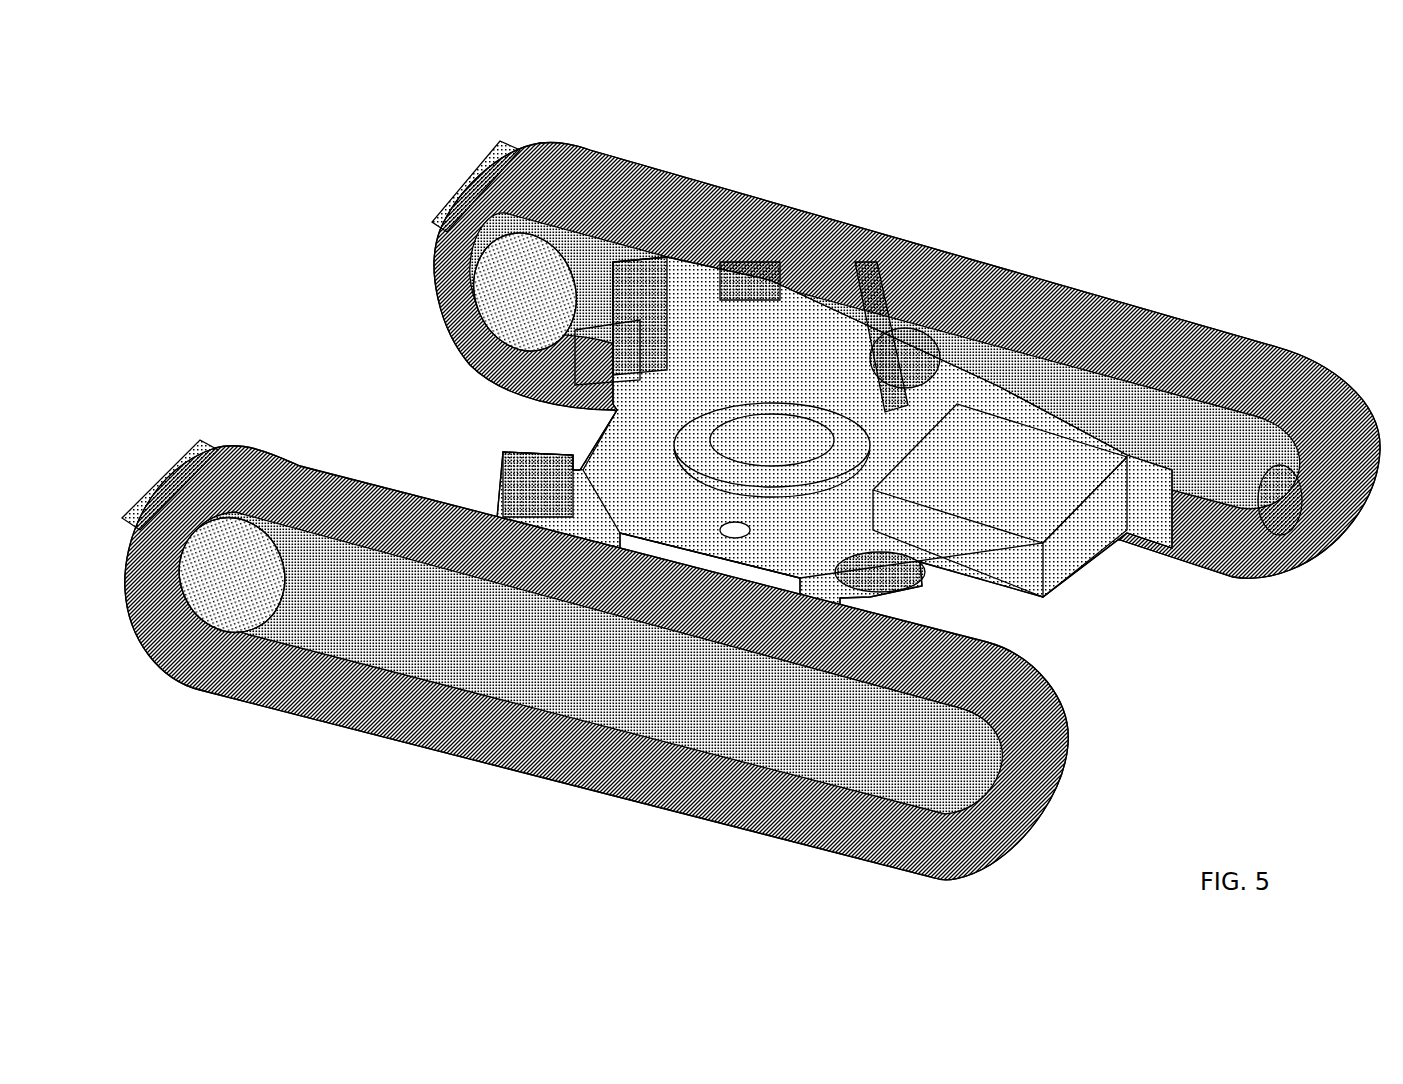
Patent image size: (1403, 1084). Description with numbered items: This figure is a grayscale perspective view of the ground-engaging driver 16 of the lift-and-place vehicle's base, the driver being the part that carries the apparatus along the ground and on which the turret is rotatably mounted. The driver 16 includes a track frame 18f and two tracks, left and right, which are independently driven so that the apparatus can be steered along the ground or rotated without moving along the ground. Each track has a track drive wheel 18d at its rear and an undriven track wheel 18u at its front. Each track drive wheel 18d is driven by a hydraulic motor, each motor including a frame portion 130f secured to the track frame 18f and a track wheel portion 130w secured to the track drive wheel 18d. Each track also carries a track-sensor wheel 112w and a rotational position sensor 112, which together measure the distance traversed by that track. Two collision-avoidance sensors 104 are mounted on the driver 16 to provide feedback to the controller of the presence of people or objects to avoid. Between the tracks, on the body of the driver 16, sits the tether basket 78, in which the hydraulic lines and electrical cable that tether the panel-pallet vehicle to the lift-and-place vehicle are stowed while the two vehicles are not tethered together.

The ground-engaging driver 16 is at (1175, 158).
The track drive wheel 18d is at (636, 257).
The track frame 18f is at (596, 345).
The undriven track wheel 18u is at (1280, 515).
The tether basket 78 is at (1021, 509).
The collision-avoidance sensor 104 is at (748, 258).
The rotational position sensor 112 is at (892, 410).
The track-sensor wheel 112w is at (925, 378).
The frame portion 130f is at (512, 300).
The track wheel portion 130w is at (215, 598).